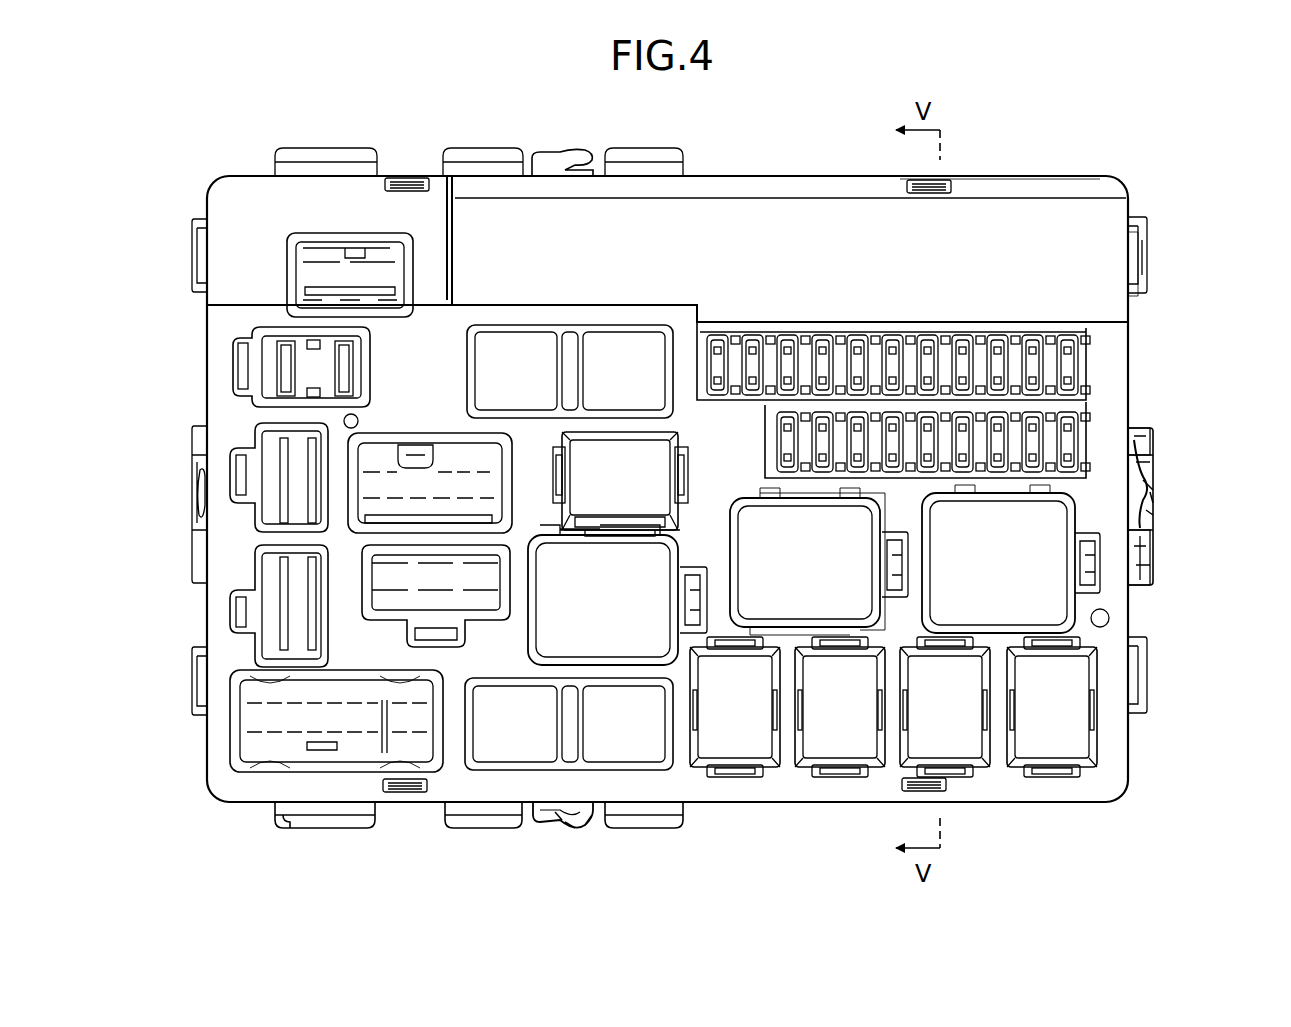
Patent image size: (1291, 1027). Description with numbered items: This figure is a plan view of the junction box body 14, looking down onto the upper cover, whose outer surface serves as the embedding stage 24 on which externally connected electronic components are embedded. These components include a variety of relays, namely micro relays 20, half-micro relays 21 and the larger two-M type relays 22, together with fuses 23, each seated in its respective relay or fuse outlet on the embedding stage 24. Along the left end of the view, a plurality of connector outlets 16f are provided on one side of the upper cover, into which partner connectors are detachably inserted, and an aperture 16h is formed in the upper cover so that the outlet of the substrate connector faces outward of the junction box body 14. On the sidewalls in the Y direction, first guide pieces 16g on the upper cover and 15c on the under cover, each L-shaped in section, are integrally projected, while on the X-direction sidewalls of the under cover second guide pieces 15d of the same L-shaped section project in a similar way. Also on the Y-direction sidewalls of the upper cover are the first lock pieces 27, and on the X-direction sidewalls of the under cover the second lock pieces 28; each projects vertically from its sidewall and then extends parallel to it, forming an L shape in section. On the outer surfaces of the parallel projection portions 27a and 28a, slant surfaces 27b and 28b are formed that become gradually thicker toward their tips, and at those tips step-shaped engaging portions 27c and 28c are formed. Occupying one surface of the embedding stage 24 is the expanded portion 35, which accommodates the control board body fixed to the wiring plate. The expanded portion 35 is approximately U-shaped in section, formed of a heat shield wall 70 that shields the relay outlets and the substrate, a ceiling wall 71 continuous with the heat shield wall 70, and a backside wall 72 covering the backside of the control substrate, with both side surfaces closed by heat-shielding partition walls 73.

The junction box body 14 is at (1131, 182).
The first guide piece 15c is at (1157, 512).
The second guide piece 15d is at (465, 818).
The connector outlet 16f is at (270, 713).
The first guide piece 16g is at (1157, 437).
The aperture 16h is at (307, 250).
The micro relay 20 is at (645, 451).
The half-micro relay 21 is at (628, 349).
The 2M relay 22 is at (631, 557).
The fuse 23 is at (1030, 345).
The embedding stage 24 is at (423, 356).
The first lock piece 27 is at (1156, 531).
The parallel projection portion 27a is at (1157, 503).
The slant surface 27b is at (1155, 490).
The step-shaped engaging portion 27c is at (1153, 462).
The second lock piece 28 is at (540, 825).
The parallel projection portion 28a is at (560, 822).
The slant surface 28b is at (570, 830).
The step-shaped engaging portion 28c is at (592, 828).
The expanded portion 35 is at (999, 176).
The heat shield wall 70 is at (880, 326).
The ceiling wall 71 is at (781, 215).
The backside wall 72 is at (1030, 178).
The heat-shielding partition wall 73 is at (1129, 309).